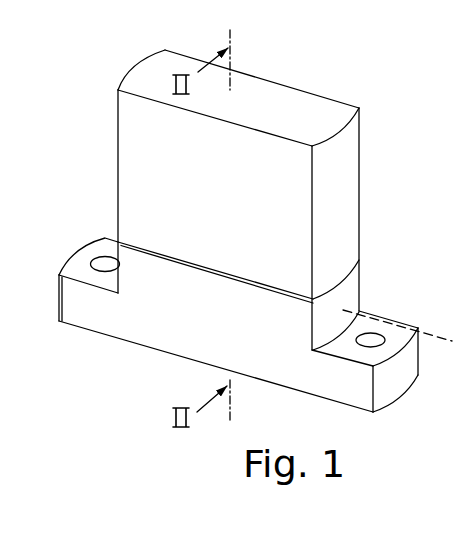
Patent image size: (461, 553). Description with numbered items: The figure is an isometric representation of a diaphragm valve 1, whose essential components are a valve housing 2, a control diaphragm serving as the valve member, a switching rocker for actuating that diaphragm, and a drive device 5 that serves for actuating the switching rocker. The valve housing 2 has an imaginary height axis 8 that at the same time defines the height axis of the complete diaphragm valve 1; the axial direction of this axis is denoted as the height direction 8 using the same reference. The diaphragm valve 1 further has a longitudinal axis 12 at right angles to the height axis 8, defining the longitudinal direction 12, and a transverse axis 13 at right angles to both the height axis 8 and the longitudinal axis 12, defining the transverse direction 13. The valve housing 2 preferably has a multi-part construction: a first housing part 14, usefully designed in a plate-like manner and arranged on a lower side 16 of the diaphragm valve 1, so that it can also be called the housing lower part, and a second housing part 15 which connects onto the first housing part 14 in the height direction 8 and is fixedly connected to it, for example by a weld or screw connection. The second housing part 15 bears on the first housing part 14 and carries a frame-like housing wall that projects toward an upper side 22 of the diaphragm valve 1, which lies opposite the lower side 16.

The diaphragm valve 1 is at (234, 239).
The valve housing 2 is at (391, 397).
The drive device 5 is at (270, 238).
The height axis 8 is at (233, 55).
The longitudinal axis 12 is at (434, 328).
The transverse axis 13 is at (212, 310).
The first housing part 14 is at (234, 326).
The second housing part 15 is at (84, 256).
The lower side 16 is at (117, 338).
The upper side 22 is at (329, 103).